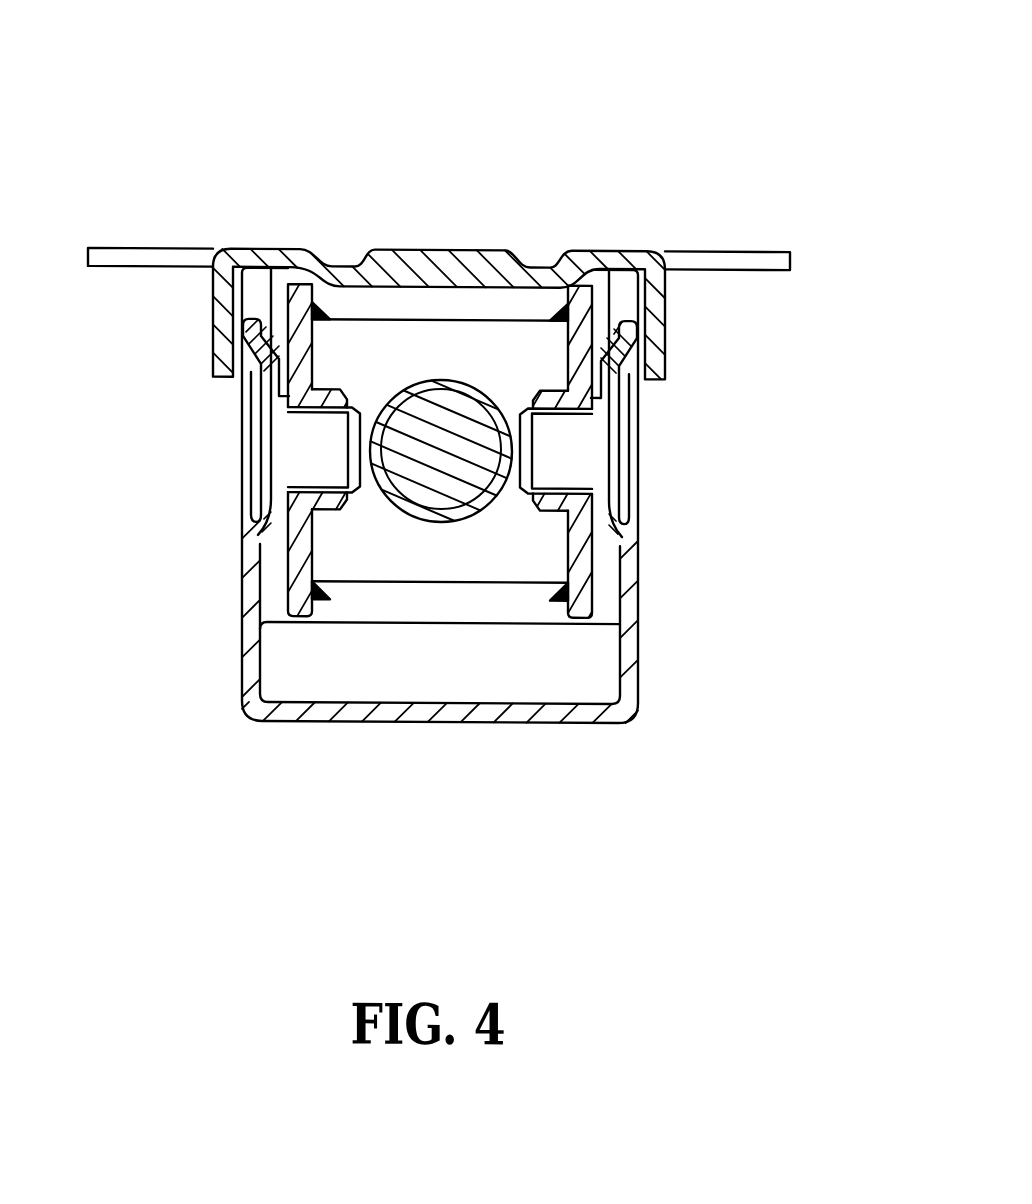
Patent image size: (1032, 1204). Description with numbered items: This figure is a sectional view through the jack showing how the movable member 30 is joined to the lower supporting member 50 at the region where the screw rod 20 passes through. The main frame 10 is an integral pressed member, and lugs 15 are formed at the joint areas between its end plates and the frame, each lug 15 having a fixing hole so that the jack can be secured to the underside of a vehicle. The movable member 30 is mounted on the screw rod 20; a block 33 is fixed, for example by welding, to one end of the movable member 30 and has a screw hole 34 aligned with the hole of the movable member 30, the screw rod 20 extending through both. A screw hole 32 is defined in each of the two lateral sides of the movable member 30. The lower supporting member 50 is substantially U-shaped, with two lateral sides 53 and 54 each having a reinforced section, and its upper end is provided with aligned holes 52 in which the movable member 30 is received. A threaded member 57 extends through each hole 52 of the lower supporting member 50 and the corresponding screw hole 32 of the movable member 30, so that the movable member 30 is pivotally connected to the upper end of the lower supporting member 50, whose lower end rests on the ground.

The main frame 10 is at (262, 250).
The lug 15 is at (740, 252).
The screw rod 20 is at (410, 420).
The movable member 30 is at (580, 580).
The screw hole 32 is at (310, 487).
The block 33 is at (515, 345).
The screw hole 34 is at (452, 383).
The lower supporting member 50 is at (458, 724).
The hole 52 is at (608, 398).
The lateral side 53 is at (243, 655).
The lateral side 54 is at (628, 673).
The threaded member 57 is at (305, 433).